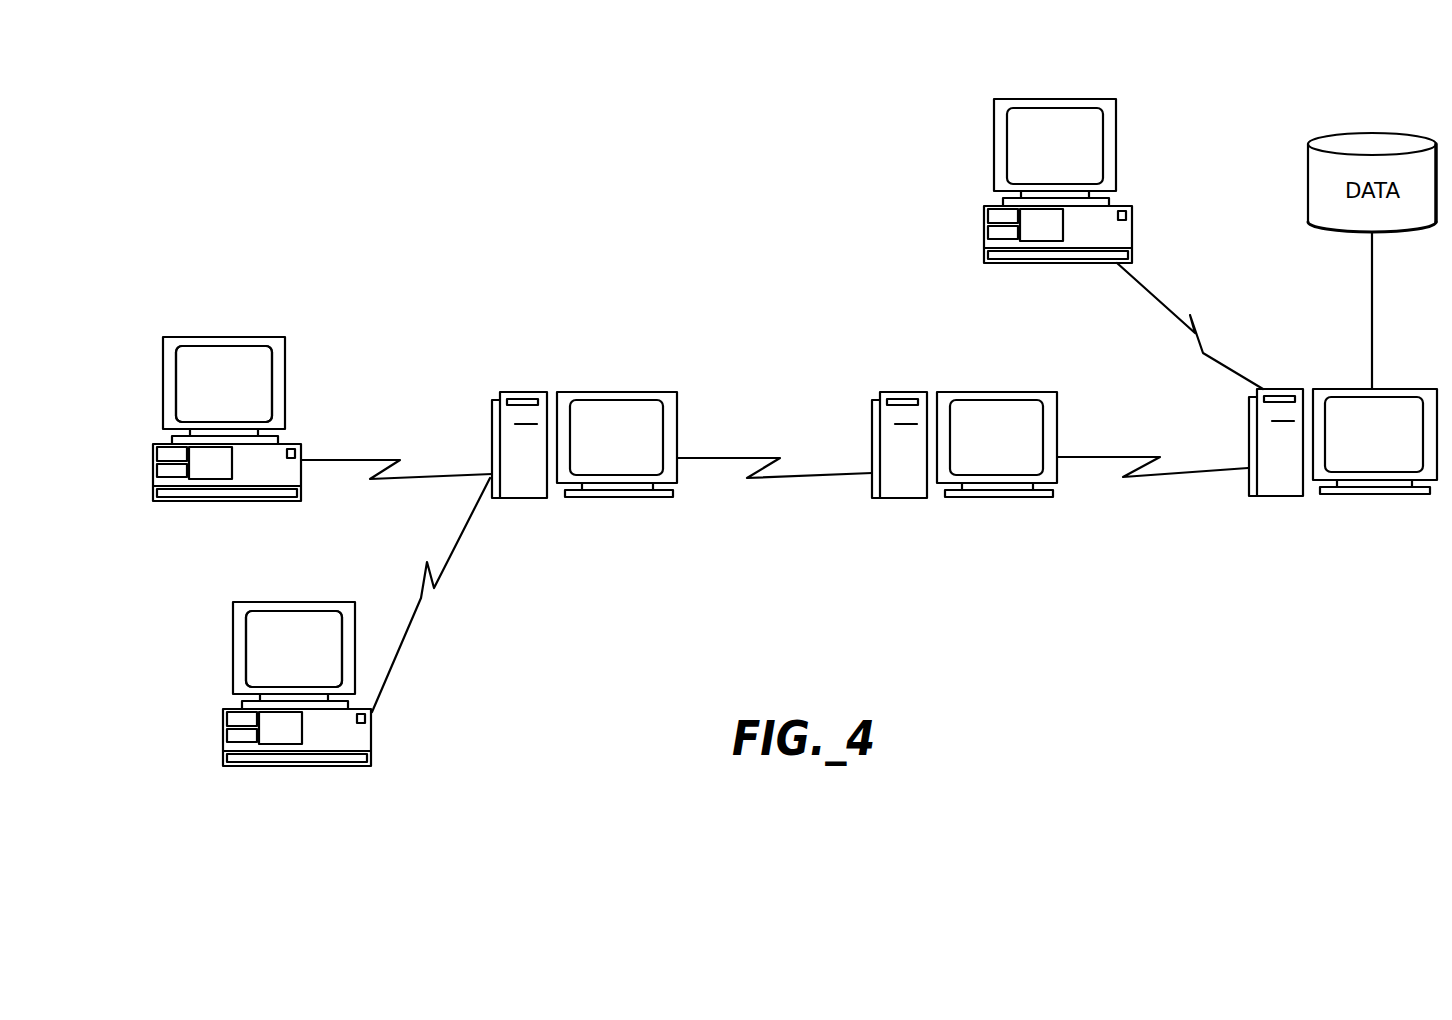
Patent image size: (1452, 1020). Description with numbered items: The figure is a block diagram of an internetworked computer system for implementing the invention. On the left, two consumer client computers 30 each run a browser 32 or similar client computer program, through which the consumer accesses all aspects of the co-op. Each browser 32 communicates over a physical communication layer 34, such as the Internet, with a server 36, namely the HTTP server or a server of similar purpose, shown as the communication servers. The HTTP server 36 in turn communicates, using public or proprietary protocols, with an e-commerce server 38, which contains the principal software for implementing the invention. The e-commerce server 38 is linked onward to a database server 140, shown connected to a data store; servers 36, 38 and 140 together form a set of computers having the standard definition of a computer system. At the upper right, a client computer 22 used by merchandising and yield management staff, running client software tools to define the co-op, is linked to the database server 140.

The client computer 22 is at (1118, 201).
The client computer 30 is at (290, 440).
The browser 32 is at (295, 584).
The physical communication layer 34 is at (380, 457).
The HTTP server 36 is at (517, 391).
The e-commerce server 38 is at (895, 391).
The database server 140 is at (1280, 388).